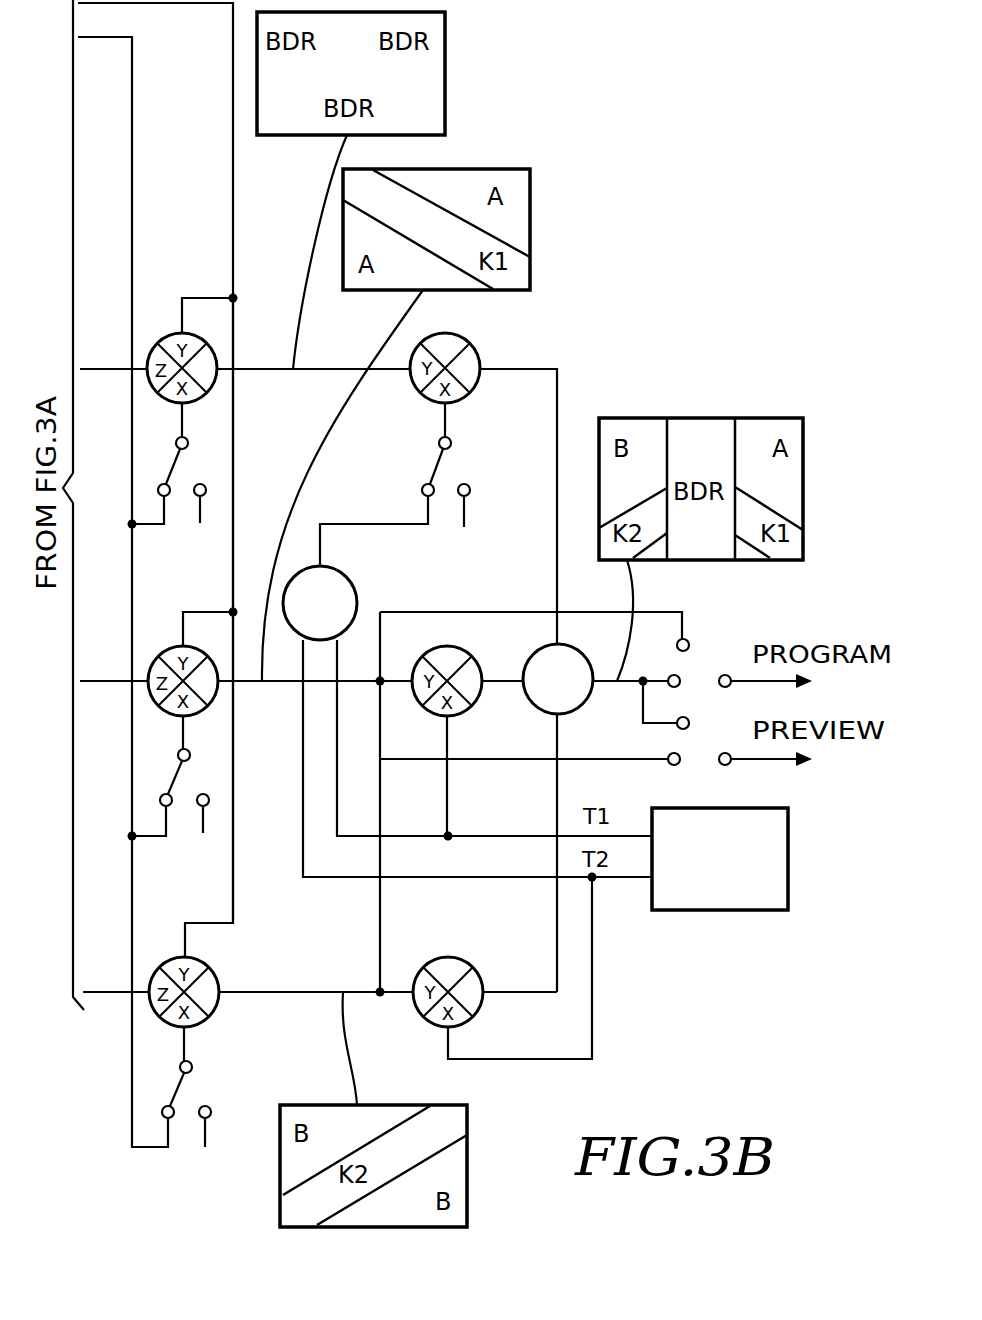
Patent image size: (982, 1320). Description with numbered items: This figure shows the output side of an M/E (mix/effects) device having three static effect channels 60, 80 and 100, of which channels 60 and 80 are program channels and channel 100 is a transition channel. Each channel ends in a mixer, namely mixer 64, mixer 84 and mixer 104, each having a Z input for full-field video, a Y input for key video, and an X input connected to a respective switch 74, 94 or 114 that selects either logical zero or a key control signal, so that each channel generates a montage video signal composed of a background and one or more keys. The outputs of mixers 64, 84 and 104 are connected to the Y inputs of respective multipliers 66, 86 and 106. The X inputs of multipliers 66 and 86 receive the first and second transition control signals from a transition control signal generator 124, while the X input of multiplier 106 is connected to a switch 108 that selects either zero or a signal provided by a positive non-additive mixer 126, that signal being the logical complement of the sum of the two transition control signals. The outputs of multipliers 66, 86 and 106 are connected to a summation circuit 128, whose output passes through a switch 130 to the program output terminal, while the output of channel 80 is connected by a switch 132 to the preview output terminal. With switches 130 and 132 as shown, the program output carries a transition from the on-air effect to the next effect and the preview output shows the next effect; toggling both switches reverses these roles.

The static effect channel 60 is at (242, 551).
The mixer 64 is at (163, 646).
The multiplier 66 is at (432, 715).
The switch 74 is at (170, 783).
The static effect channel 80 is at (242, 840).
The mixer 84 is at (162, 960).
The multiplier 86 is at (480, 972).
The switch 94 is at (182, 1093).
The static effect channel 100 is at (247, 356).
The mixer 104 is at (163, 338).
The multiplier 106 is at (472, 340).
The switch 108 is at (437, 473).
The switch 114 is at (163, 470).
The transition control signal generator 124 is at (717, 913).
The positive non-additive mixer 126 is at (340, 564).
The summation circuit 128 is at (527, 696).
The switch 130 is at (700, 678).
The switch 132 is at (700, 762).